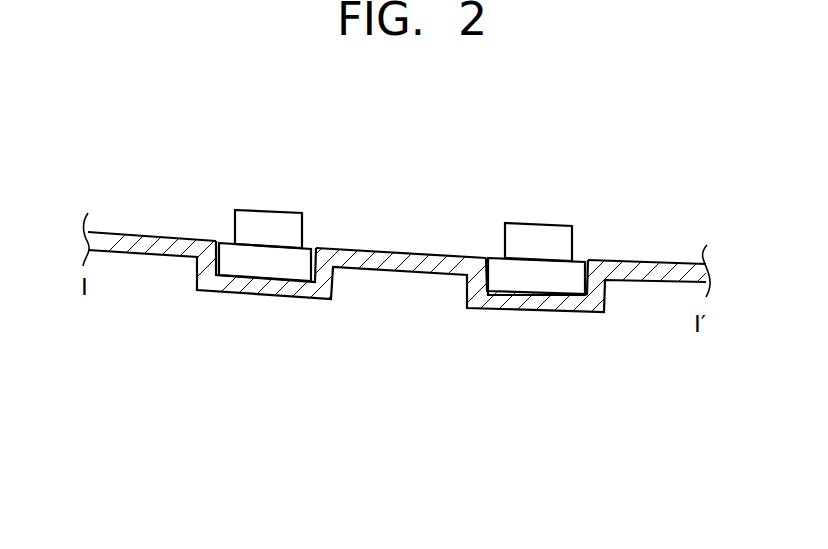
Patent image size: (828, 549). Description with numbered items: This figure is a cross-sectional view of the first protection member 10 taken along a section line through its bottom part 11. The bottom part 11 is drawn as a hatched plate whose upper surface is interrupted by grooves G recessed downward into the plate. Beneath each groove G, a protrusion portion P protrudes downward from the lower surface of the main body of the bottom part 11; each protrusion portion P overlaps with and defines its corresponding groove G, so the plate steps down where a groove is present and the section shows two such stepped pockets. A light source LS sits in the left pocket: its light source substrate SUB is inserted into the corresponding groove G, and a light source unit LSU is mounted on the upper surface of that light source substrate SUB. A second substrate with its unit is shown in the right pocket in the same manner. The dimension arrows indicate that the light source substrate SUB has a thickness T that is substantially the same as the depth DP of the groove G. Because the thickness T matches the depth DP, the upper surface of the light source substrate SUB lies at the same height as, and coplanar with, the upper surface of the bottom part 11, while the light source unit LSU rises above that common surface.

The first protection member 10 is at (653, 265).
The bottom part 11 is at (410, 267).
The protrusion portion P is at (262, 298).
The light source LS is at (307, 156).
The light source substrate SUB is at (225, 257).
The light source unit LSU is at (273, 223).
The groove G is at (313, 278).
The thickness T is at (265, 247).
The depth DP is at (359, 250).